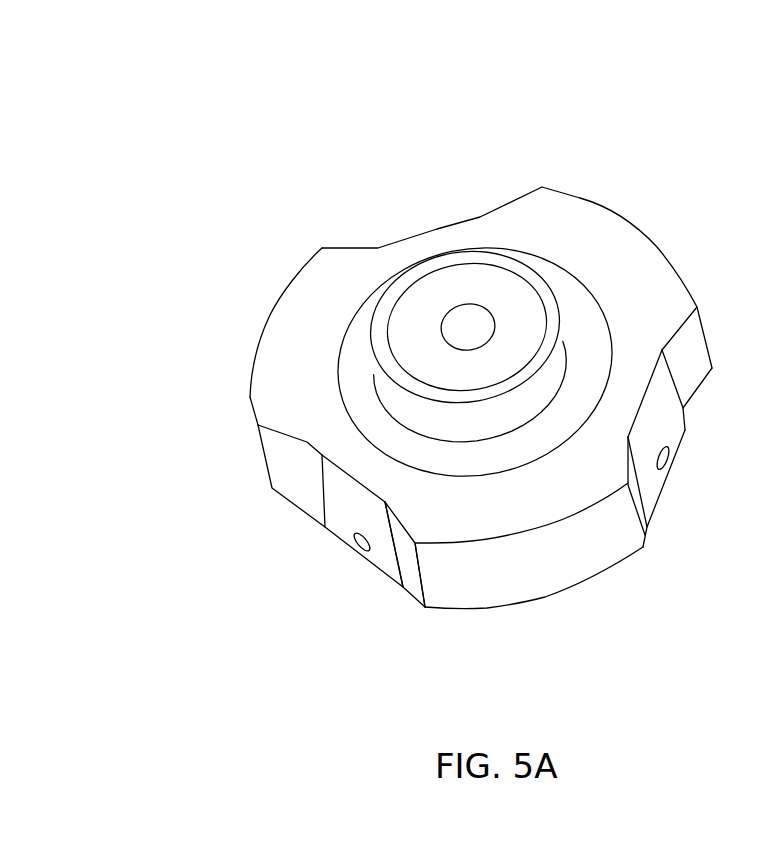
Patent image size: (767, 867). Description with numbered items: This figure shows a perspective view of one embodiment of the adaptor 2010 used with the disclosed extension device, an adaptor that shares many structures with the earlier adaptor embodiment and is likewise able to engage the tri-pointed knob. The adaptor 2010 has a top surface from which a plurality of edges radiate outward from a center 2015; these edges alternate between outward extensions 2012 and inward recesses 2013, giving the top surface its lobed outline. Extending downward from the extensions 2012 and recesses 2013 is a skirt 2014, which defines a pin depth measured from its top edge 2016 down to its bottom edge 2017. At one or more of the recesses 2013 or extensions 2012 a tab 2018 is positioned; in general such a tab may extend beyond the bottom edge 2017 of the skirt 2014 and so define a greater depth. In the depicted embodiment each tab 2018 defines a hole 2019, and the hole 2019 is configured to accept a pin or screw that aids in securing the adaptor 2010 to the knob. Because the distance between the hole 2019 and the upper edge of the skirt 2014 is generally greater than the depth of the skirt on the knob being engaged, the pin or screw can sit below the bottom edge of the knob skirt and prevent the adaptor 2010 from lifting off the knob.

The adaptor 2010 is at (277, 150).
The extensions 2012 is at (633, 222).
The recesses 2013 is at (432, 231).
The skirt 2014 is at (493, 585).
The center 2015 is at (440, 329).
The top edge 2016 is at (577, 513).
The bottom edge 2017 is at (573, 593).
The tab 2018 is at (348, 518).
The hole 2019 is at (368, 548).